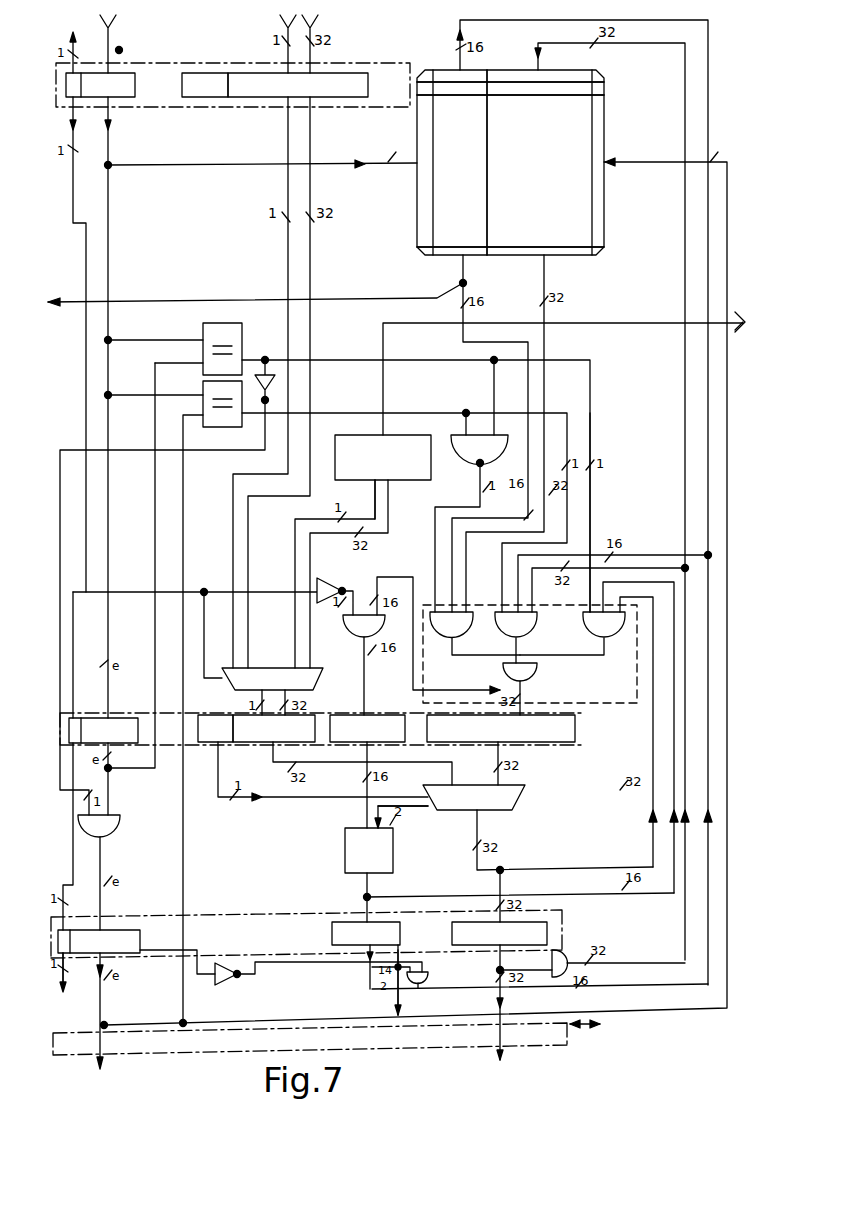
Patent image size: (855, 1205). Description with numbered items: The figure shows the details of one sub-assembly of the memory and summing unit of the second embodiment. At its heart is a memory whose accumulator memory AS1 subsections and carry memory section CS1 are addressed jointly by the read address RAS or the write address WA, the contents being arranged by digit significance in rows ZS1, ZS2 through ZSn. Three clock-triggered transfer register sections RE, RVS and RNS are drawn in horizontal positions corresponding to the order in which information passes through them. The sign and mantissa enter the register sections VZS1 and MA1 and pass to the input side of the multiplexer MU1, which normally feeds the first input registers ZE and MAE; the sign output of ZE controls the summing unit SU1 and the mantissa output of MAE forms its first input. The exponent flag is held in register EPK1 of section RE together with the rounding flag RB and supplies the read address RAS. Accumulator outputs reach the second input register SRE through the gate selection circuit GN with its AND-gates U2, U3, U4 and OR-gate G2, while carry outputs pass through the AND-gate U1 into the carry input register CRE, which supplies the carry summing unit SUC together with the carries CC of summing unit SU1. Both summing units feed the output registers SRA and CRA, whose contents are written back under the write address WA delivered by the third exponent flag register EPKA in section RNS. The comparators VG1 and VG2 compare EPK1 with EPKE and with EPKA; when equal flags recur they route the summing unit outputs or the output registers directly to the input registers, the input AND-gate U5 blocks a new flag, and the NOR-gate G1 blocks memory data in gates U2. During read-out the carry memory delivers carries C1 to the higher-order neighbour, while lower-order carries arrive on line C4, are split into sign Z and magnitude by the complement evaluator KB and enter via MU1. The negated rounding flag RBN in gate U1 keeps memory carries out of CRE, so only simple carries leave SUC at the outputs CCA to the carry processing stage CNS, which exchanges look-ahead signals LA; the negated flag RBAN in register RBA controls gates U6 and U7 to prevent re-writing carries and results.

The result and rounding flag RB is at (110, 52).
The exponent flag register EPK1 is at (100, 85).
The sign register section VZS1 is at (205, 85).
The mantissa register section MA1 is at (298, 85).
The input transfer register section RE is at (378, 100).
The read address RAS is at (222, 168).
The write address WA is at (668, 164).
The carry memory section CS1 is at (510, 162).
The accumulator memory AS1 is at (518, 162).
The memory row ZS1 is at (582, 84).
The memory row ZS2 is at (582, 94).
The memory row ZSn is at (585, 250).
The carries C1 is at (164, 298).
The carry line C4 is at (752, 323).
The first comparator VG1 is at (208, 328).
The second comparator VG2 is at (240, 440).
The complement evaluator KB is at (363, 551).
The sign Z is at (380, 492).
The NOR-gate G1 is at (472, 470).
The negated rounding flag RBN is at (352, 588).
The multiplexer MU1 is at (272, 680).
The AND-gate U1 is at (352, 640).
The gate selection circuit GN is at (582, 700).
The AND-gate U2 is at (460, 636).
The AND-gate U3 is at (522, 636).
The AND-gate U4 is at (597, 653).
The OR-gate G2 is at (504, 680).
The intermediate transfer register section RVS is at (176, 748).
The second exponent flag register EPKE is at (103, 730).
The sign input register ZE is at (313, 758).
The mantissa input register MAE is at (342, 750).
The carry input register CRE is at (367, 771).
The second input register SRE is at (501, 750).
The summing unit SU1 is at (520, 790).
The carries CC is at (436, 810).
The input AND-gate U5 is at (110, 826).
The carry summing unit SUC is at (345, 852).
The third exponent flag register EPKA is at (99, 941).
The carry output register CRA is at (520, 968).
The sum output register SRA is at (502, 946).
The AND-gate U6 is at (436, 992).
The AND-gate U7 is at (562, 978).
The output transfer register RNS is at (160, 948).
The negated rounding flag RBAN is at (322, 965).
The carry outputs CCA is at (392, 1006).
The rounding flag register RBA is at (70, 976).
The carry processing stage CNS is at (282, 1049).
The look-ahead signals LA is at (600, 1026).